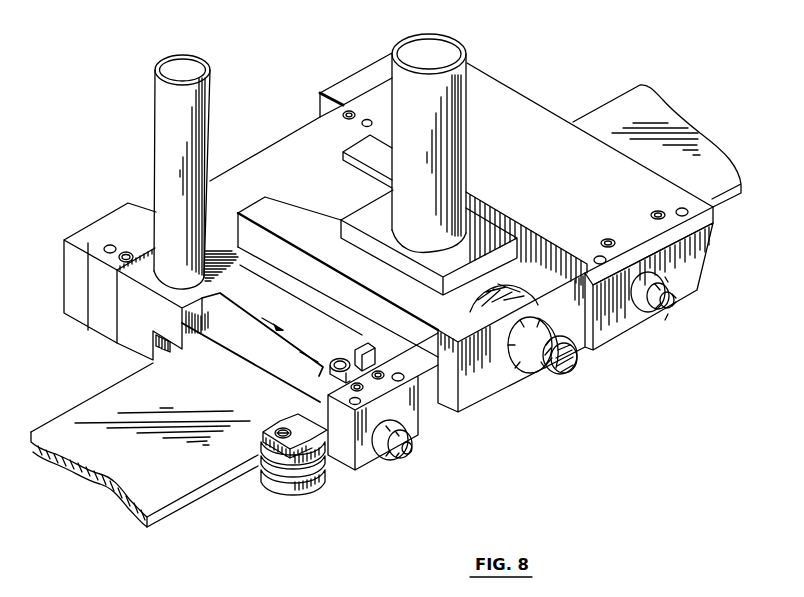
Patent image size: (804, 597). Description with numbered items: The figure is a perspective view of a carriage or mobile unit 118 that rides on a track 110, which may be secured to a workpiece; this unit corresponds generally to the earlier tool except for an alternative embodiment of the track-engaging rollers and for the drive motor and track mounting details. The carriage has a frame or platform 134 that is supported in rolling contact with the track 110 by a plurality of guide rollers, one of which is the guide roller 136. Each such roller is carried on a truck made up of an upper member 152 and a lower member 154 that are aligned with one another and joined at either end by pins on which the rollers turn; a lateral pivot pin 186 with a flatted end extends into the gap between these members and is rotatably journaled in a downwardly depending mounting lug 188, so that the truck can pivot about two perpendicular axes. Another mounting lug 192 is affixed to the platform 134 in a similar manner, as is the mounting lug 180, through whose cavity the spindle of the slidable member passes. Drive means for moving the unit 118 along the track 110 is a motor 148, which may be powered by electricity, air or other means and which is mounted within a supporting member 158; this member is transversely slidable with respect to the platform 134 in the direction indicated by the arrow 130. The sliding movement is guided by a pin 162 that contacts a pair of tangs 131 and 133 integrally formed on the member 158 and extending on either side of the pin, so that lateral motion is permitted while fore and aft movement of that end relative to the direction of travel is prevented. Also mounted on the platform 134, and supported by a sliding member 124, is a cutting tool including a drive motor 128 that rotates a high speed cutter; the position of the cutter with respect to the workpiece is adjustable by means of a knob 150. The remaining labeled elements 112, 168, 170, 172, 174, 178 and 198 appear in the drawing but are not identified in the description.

The track 110 is at (178, 487).
The sheet workpiece 112 is at (67, 410).
The mobile unit 118 is at (261, 146).
The sliding member 124 is at (367, 223).
The drive motor 128 is at (450, 157).
The arrow 130 is at (232, 292).
The tang 131 is at (363, 363).
The tang 133 is at (320, 365).
The platform 134 is at (304, 161).
The guide roller 136 is at (267, 480).
The motor 148 is at (170, 142).
The knob 150 is at (172, 348).
The upper member 152 is at (315, 413).
The lower member 154 is at (320, 472).
The supporting member 158 is at (147, 330).
The pin 162 is at (337, 355).
The side face of rail 168 is at (363, 300).
The support block 170 is at (500, 215).
The rail 172 is at (267, 213).
The stop block 174 is at (385, 162).
The frame 178 is at (570, 268).
The mounting lug 180 is at (115, 220).
The lateral pivot pin 186 is at (412, 453).
The mounting lug 188 is at (363, 463).
The mounting lug 192 is at (633, 318).
The rear block 198 is at (373, 73).